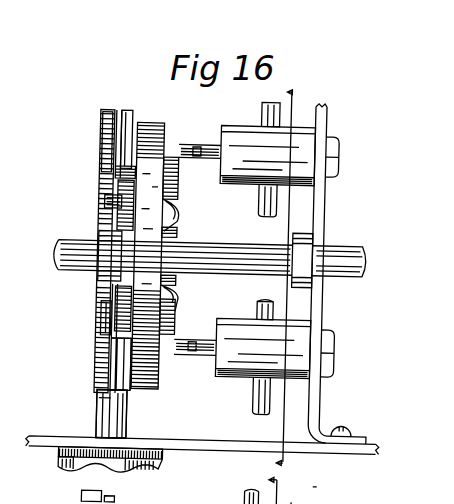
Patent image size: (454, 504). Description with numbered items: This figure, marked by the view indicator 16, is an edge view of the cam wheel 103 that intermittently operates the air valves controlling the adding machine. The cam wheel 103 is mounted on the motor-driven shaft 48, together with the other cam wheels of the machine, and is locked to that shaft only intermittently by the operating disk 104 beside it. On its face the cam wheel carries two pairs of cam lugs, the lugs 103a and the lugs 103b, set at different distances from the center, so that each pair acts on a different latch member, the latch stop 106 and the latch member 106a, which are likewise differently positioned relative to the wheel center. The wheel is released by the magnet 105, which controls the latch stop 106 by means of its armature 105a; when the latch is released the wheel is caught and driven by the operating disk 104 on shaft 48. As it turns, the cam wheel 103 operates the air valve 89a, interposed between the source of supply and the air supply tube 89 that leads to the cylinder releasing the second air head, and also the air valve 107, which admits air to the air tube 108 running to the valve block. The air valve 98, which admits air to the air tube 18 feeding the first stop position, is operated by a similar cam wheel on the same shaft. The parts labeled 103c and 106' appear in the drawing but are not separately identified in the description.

The section line 16- 16 is at (274, 278).
The air tube 18 is at (243, 497).
The shaft 48 is at (58, 255).
The air supply tube 89 is at (264, 305).
The air valve 89a is at (236, 330).
The air valve 98 is at (303, 494).
The cam wheel 103 is at (149, 133).
The cam lugs 103a is at (172, 316).
The cam lugs 103b is at (173, 192).
The gear 103c is at (101, 168).
The operating disk 104 is at (114, 218).
The magnet 105 is at (66, 462).
The armature 105a is at (130, 423).
The latch stop 106 is at (83, 317).
The lever 106' is at (85, 137).
The latch member 106a is at (124, 118).
The air valve 107 is at (243, 118).
The air tube 108 is at (266, 105).